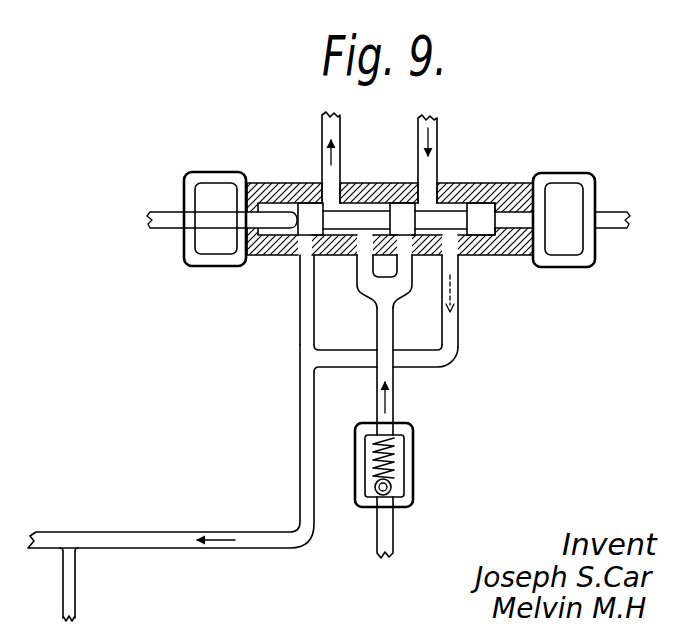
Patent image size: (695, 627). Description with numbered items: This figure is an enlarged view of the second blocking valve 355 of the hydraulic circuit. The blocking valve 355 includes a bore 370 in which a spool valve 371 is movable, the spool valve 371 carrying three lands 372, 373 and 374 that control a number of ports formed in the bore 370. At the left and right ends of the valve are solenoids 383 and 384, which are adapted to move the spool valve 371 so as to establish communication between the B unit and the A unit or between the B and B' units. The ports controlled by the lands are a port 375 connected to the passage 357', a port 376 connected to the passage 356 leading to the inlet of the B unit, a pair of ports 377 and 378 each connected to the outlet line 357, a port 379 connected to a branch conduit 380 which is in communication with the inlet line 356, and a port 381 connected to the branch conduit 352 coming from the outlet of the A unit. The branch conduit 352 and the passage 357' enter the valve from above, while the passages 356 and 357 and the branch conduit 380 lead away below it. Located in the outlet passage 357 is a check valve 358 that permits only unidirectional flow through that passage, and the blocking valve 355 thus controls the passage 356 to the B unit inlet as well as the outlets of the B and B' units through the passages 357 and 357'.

The second blocking valve 355 is at (539, 150).
The solenoid 383 is at (208, 193).
The solenoid 384 is at (563, 193).
The land 372 is at (312, 218).
The spool valve 371 is at (342, 212).
The land 373 is at (403, 223).
The land 374 is at (463, 218).
The bore 370 is at (488, 203).
The outlet passage 357' is at (301, 153).
The port 375 is at (333, 197).
The branch conduit 352 is at (436, 128).
The port 381 is at (433, 190).
The port 376 is at (305, 250).
The port 377 is at (362, 258).
The port 378 is at (404, 260).
The port 379 is at (457, 258).
The branch conduit 380 is at (443, 357).
The passage 356 is at (302, 404).
The outlet passage 357 is at (431, 433).
The check valve 358 is at (410, 467).